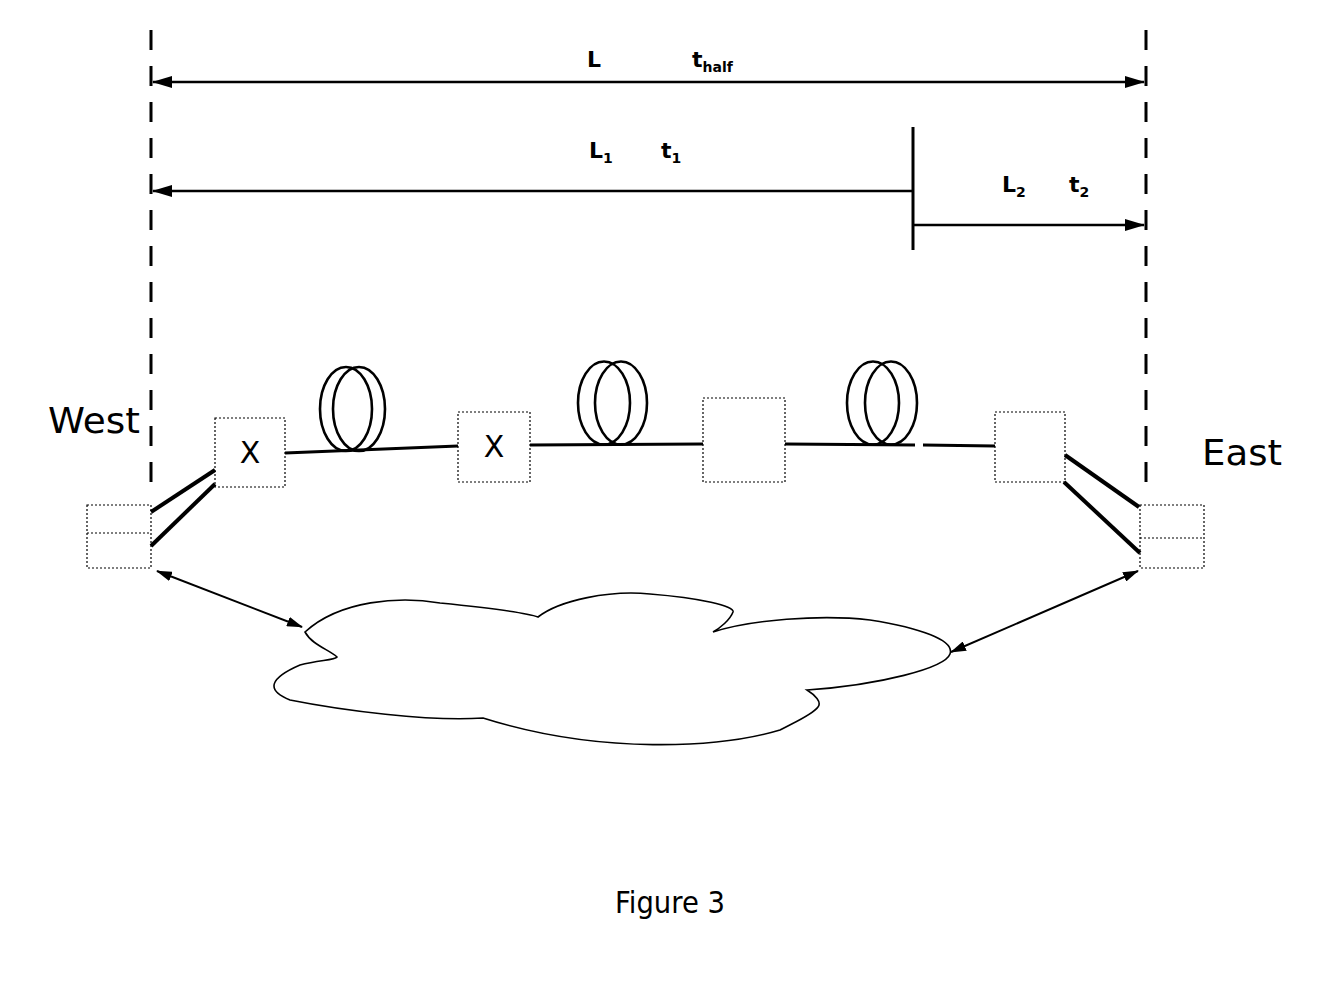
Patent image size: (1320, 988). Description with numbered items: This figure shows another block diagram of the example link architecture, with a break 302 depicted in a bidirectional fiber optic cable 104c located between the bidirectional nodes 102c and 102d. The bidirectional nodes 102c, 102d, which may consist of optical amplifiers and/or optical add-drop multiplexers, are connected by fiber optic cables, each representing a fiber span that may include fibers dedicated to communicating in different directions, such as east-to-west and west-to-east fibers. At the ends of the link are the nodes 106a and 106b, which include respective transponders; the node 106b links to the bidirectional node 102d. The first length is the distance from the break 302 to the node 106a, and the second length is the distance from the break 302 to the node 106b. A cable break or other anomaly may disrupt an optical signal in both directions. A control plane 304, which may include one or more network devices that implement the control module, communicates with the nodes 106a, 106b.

The bidirectional node 102c is at (762, 398).
The bidirectional node 102d is at (1030, 483).
The fiber optic cable 104c is at (830, 446).
The node 106a is at (122, 505).
The node 106b is at (1205, 505).
The break 302 is at (927, 435).
The control plane 304 is at (780, 735).